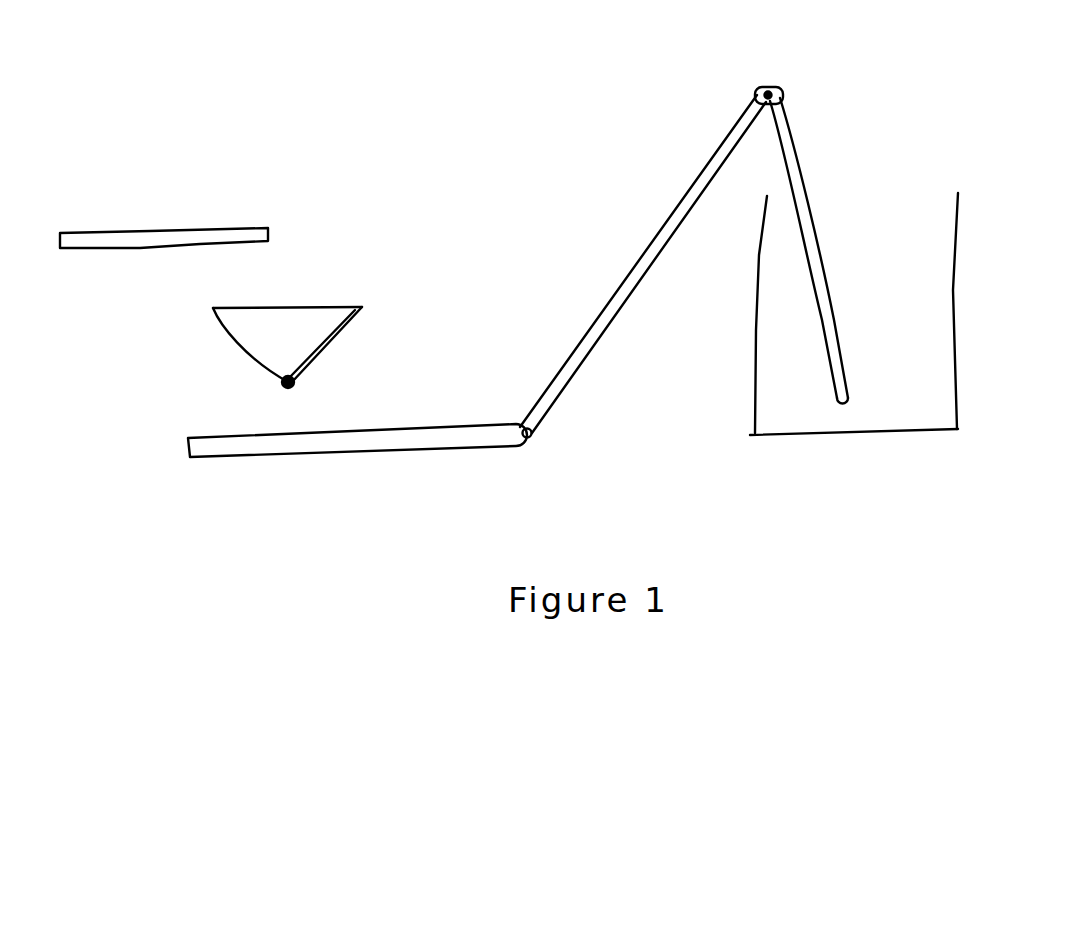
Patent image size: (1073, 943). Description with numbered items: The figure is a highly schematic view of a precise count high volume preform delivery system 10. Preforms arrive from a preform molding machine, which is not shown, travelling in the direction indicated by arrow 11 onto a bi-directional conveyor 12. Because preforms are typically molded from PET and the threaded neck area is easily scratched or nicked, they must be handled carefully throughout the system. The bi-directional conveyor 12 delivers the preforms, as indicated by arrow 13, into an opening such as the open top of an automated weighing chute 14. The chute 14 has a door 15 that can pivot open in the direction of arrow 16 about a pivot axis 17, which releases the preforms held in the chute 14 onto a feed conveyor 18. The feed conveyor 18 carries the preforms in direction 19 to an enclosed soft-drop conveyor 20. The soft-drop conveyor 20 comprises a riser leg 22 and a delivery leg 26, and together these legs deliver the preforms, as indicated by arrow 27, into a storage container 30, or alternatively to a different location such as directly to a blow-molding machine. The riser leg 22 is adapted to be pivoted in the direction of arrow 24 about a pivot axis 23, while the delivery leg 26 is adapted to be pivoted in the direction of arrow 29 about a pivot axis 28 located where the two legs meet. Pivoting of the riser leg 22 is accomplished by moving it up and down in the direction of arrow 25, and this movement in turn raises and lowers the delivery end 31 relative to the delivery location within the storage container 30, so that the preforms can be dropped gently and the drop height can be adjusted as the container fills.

The precise count high volume preform delivery system 10 is at (506, 127).
The arrow 11 is at (130, 203).
The bi-directional conveyor 12 is at (115, 250).
The arrow 13 is at (253, 211).
The automated weighing chute 14 is at (238, 333).
The door 15 is at (355, 322).
The arrow 16 is at (345, 338).
The pivot axis 17 is at (282, 390).
The feed conveyor 18 is at (322, 451).
The direction 19 is at (540, 375).
The enclosed soft-drop conveyor 20 is at (824, 135).
The riser leg 22 is at (616, 308).
The pivot axis 23 is at (522, 438).
The arrow 24 is at (512, 472).
The arrow 25 is at (642, 194).
The delivery leg 26 is at (810, 205).
The arrow 27 is at (853, 343).
The pivot axis 28 is at (753, 94).
The arrow 29 is at (740, 78).
The storage container 30 is at (960, 373).
The delivery end 31 is at (836, 398).